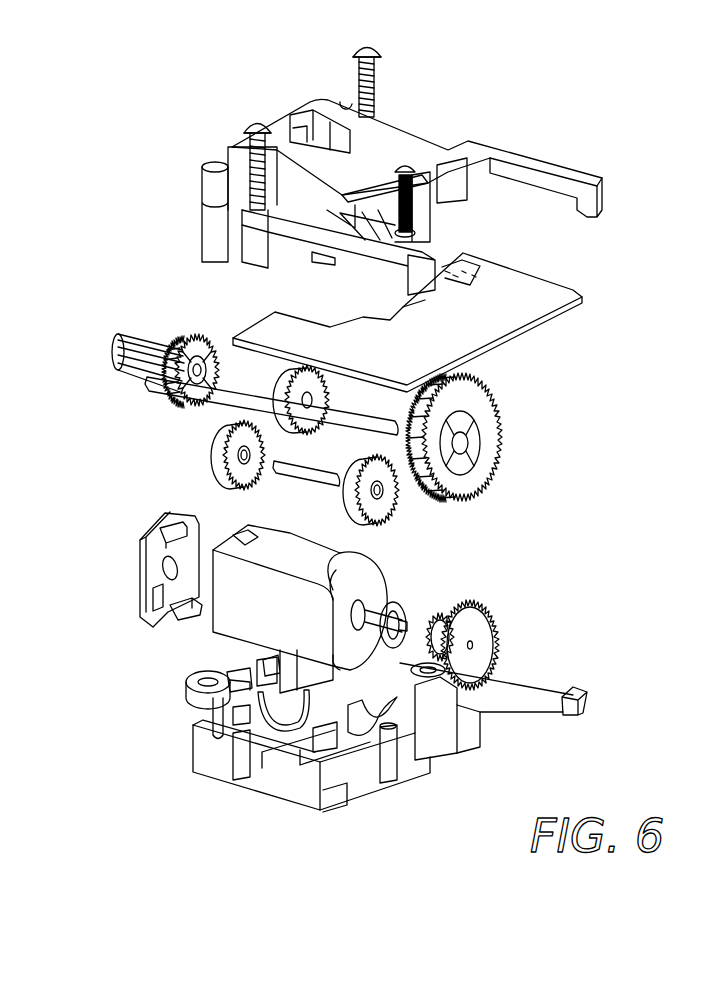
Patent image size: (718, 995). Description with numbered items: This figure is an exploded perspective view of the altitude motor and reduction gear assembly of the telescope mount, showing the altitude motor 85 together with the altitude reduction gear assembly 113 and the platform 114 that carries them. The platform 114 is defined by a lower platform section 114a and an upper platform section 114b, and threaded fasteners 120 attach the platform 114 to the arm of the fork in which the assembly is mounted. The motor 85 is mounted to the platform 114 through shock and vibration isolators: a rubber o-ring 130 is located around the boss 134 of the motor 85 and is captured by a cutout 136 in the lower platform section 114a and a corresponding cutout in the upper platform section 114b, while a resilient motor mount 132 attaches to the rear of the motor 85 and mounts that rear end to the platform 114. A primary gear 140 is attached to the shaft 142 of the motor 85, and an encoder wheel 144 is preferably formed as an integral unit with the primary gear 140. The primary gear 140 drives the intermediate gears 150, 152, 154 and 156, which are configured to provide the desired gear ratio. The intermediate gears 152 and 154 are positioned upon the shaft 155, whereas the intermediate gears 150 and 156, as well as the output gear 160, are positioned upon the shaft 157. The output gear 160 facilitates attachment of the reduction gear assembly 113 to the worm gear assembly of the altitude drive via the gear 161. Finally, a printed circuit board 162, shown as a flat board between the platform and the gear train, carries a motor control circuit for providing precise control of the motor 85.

The altitude motor 85 is at (277, 619).
The altitude reduction gear assembly 113 is at (152, 468).
The platform 114 is at (366, 749).
The lower platform section 114a is at (192, 753).
The upper platform section 114b is at (550, 160).
The threaded fasteners 120 is at (357, 66).
The rubber o-ring 130 is at (403, 603).
The resilient motor mount 132 is at (163, 615).
The boss 134 is at (331, 597).
The cutout 136 is at (340, 713).
The primary gear 140 is at (440, 617).
The shaft 142 is at (362, 603).
The encoder wheel 144 is at (496, 616).
The intermediate gear 150 is at (505, 432).
The intermediate gear 152 is at (368, 518).
The intermediate gear 154 is at (232, 480).
The shaft 155 is at (313, 478).
The intermediate gear 156 is at (308, 434).
The shaft 157 is at (382, 415).
The output gear 160 is at (210, 392).
The gear 161 is at (158, 337).
The printed circuit board 162 is at (512, 342).